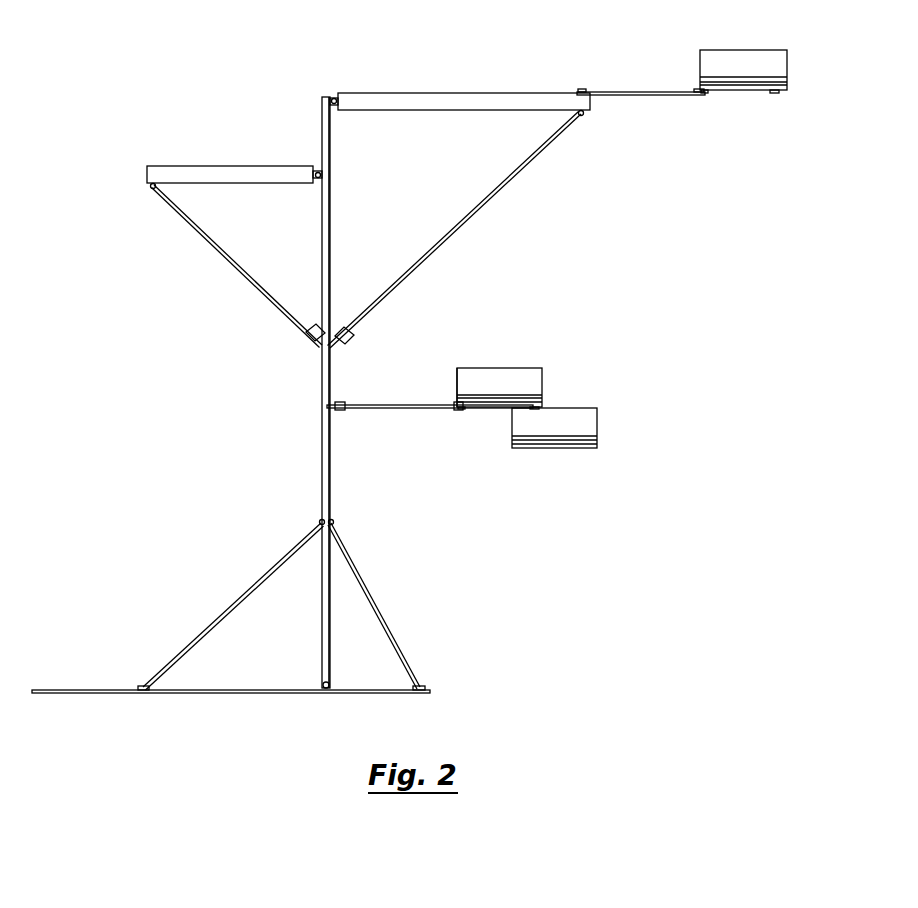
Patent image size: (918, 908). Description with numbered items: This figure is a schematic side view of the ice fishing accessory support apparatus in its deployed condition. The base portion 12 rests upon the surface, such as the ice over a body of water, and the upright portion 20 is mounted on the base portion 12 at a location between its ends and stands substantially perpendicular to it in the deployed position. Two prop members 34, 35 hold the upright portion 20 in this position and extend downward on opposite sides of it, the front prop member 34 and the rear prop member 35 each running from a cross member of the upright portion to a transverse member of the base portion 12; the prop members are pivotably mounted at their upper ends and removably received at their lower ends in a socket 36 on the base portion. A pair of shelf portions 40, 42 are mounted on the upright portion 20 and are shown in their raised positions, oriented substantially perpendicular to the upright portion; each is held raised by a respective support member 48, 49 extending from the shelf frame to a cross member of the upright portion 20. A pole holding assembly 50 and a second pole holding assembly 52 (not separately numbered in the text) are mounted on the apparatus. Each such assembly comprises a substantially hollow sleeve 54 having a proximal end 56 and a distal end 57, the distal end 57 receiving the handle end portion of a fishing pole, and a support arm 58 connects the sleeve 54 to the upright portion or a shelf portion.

The base portion 12 is at (255, 693).
The upright portion 20 is at (324, 457).
The prop member 34 is at (253, 585).
The prop member 35 is at (357, 572).
The socket 36 is at (140, 687).
The shelf portion 40 is at (233, 172).
The shelf portion 42 is at (455, 103).
The support member 48 is at (238, 268).
The support member 49 is at (475, 215).
The pole holding assembly 50 is at (590, 452).
The upper box assembly 52 is at (530, 365).
The sleeve 54 is at (503, 372).
The proximal end 56 is at (457, 380).
The distal end 57 is at (543, 383).
The support arm 58 is at (397, 410).